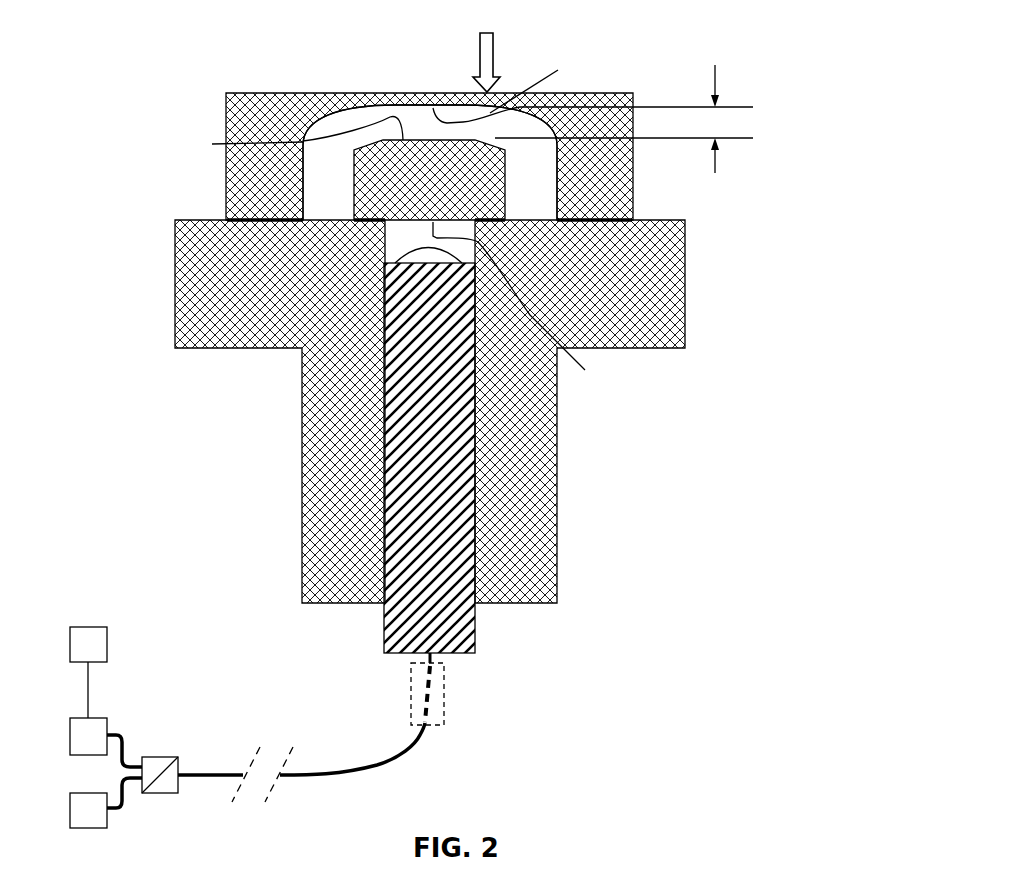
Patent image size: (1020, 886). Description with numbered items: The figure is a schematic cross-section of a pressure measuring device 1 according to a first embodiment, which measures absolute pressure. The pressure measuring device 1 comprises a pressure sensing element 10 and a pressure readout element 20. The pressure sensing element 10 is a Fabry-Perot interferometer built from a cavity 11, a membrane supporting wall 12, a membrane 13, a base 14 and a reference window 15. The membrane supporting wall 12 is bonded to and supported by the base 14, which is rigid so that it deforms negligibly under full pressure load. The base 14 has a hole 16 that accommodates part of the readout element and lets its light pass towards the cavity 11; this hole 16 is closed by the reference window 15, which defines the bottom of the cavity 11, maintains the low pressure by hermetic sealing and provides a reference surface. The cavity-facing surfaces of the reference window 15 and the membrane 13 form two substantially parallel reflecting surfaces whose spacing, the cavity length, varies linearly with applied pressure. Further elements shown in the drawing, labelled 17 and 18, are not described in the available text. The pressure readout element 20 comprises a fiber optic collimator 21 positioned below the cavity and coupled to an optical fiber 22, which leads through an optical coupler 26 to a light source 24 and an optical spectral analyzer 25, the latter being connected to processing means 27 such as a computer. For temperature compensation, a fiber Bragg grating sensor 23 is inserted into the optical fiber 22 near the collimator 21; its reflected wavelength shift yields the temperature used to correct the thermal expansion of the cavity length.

The pressure measuring device 1 is at (138, 72).
The pressure sensing element 10 is at (752, 255).
The cavity 11 is at (413, 122).
The membrane supporting wall 12 is at (605, 195).
The membrane 13 is at (392, 98).
The base 14 is at (550, 445).
The reference window 15 is at (497, 187).
The hole 16 is at (400, 242).
The bonding layer 17 is at (280, 220).
The support layer 18 is at (353, 222).
The pressure readout element 20 is at (586, 648).
The fiber optic collimator 21 is at (390, 635).
The optical fiber 22 is at (425, 748).
The fiber Bragg grating sensor 23 is at (445, 685).
The light source 24 is at (93, 822).
The optical spectral analyzer 25 is at (100, 725).
The optical coupler 26 is at (165, 757).
The processing means 27 is at (103, 632).